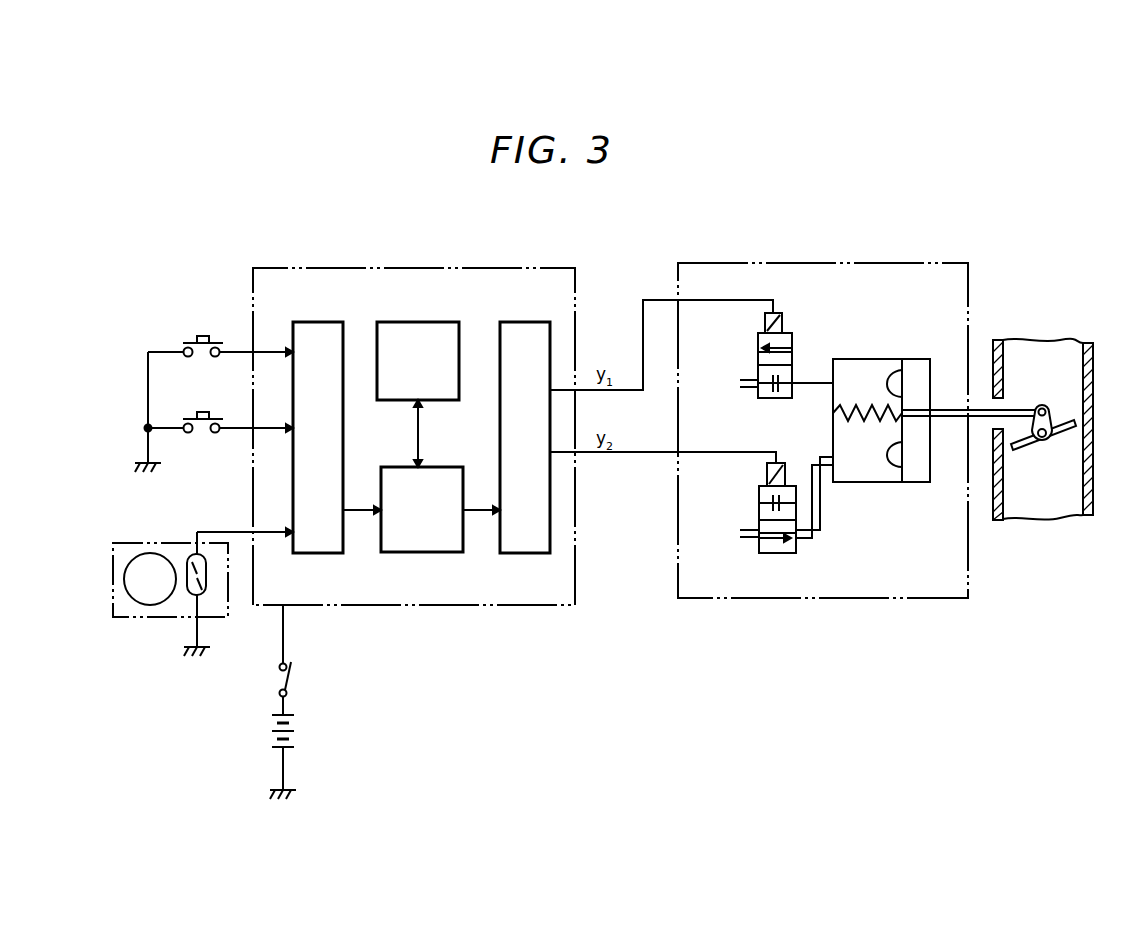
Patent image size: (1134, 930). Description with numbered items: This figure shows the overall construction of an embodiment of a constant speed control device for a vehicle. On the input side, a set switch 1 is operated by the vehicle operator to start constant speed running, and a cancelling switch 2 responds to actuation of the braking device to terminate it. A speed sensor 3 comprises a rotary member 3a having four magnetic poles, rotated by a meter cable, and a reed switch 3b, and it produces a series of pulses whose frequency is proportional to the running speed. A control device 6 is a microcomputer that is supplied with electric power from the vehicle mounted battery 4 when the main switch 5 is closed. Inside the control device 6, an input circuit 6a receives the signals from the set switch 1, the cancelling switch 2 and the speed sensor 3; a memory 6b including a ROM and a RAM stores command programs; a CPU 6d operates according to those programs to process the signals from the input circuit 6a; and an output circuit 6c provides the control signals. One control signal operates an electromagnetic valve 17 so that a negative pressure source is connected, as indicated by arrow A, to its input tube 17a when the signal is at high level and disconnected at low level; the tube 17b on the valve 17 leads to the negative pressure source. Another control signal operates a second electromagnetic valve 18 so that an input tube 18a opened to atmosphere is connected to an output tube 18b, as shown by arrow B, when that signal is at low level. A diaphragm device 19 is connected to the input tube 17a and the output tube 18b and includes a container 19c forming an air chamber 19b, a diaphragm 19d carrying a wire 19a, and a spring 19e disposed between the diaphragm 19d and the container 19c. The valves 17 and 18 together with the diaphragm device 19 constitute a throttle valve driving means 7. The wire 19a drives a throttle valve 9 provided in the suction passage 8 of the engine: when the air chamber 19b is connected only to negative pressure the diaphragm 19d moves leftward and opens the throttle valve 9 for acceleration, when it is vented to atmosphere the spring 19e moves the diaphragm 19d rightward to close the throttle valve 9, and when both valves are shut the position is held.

The set switch 1 is at (188, 340).
The cancelling switch 2 is at (187, 416).
The speed sensor 3 is at (172, 582).
The rotary member 3a is at (136, 556).
The reed switch 3b is at (185, 585).
The battery 4 is at (294, 732).
The main switch 5 is at (290, 678).
The control device 6 is at (409, 268).
The input circuit 6a is at (320, 322).
The memory 6b is at (427, 322).
The output circuit 6c is at (541, 322).
The CPU 6d is at (444, 552).
The throttle valve driving means 7 is at (867, 263).
The suction passage 8 is at (1047, 352).
The throttle valve 9 is at (1066, 432).
The electromagnetic valve 17 is at (760, 354).
The input tube 17a is at (808, 386).
The inlet port of first valve 17b is at (748, 390).
The electromagnetic valve 18 is at (784, 544).
The input tube 18a is at (750, 528).
The output tube 18b is at (820, 532).
The diaphragm device 19 is at (936, 408).
The wire 19a is at (945, 410).
The air chamber 19b is at (856, 335).
The container 19c is at (897, 511).
The diaphragm 19d is at (905, 432).
The spring 19e is at (865, 425).
The arrow A is at (758, 342).
The arrow B is at (773, 553).